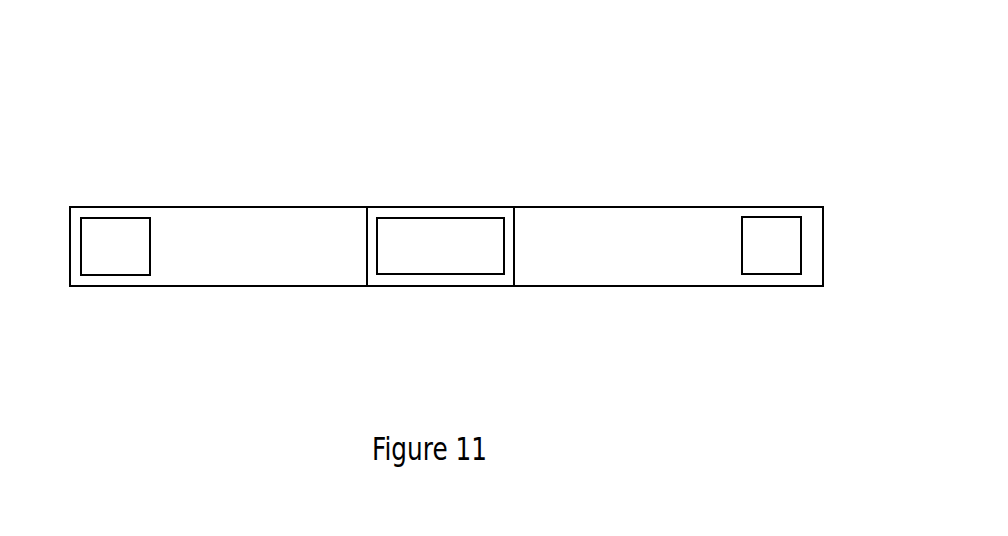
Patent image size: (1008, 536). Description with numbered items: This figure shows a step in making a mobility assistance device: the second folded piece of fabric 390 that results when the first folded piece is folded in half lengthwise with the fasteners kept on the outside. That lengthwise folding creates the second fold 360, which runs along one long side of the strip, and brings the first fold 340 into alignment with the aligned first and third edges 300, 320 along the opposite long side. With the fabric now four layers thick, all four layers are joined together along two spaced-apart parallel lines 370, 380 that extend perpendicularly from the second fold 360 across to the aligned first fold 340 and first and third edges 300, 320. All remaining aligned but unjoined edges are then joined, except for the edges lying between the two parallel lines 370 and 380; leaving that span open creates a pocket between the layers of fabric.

The first edge 300 is at (248, 287).
The third edge 320 is at (296, 287).
The first fold 340 is at (218, 287).
The second fold 360 is at (230, 207).
The first parallel line 370 is at (367, 228).
The second parallel line 380 is at (515, 245).
The second folded piece of fabric 390 is at (755, 172).